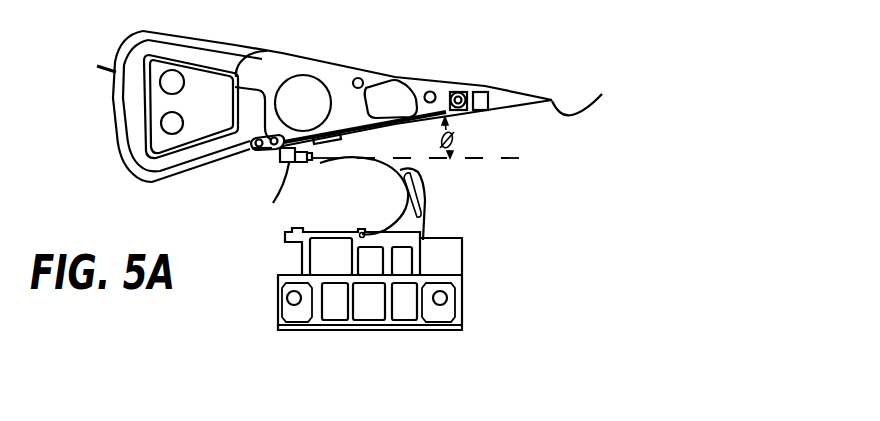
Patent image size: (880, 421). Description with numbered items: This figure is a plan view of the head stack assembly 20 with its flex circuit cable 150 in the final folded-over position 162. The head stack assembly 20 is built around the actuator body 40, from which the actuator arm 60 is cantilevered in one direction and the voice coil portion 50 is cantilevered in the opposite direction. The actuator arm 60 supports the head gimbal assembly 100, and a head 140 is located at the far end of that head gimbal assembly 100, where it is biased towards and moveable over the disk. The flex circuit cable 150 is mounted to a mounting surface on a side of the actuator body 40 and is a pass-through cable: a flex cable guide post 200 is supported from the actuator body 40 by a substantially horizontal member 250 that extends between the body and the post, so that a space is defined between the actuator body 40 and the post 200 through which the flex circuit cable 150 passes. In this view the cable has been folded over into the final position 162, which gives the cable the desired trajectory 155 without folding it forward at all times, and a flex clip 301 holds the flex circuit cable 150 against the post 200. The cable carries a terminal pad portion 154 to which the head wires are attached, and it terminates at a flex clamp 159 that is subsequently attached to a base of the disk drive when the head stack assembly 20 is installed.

The head stack assembly 20 is at (462, 72).
The actuator body 40 is at (282, 56).
The voice coil portion 50 is at (229, 44).
The actuator arm 60 is at (382, 72).
The head gimbal assembly 100 is at (513, 93).
The head 140 is at (600, 100).
The flex circuit cable 150 is at (420, 168).
The terminal pad portion 154 is at (356, 137).
The trajectory 155 is at (438, 159).
The flex clamp 159 is at (401, 330).
The final folded-over position 162 is at (279, 202).
The flex cable guide post 200 is at (310, 160).
The horizontal member 250 is at (272, 150).
The flex clip 301 is at (284, 165).